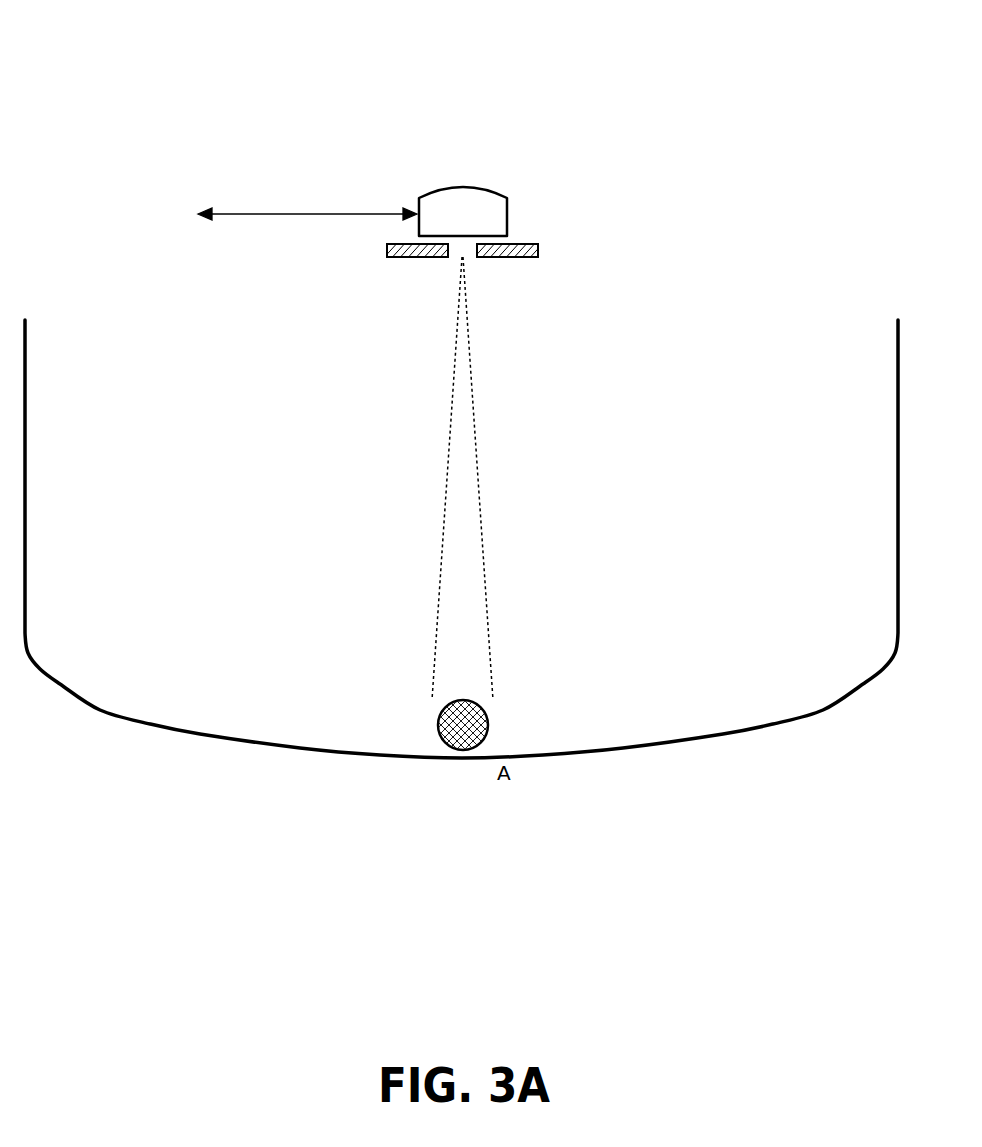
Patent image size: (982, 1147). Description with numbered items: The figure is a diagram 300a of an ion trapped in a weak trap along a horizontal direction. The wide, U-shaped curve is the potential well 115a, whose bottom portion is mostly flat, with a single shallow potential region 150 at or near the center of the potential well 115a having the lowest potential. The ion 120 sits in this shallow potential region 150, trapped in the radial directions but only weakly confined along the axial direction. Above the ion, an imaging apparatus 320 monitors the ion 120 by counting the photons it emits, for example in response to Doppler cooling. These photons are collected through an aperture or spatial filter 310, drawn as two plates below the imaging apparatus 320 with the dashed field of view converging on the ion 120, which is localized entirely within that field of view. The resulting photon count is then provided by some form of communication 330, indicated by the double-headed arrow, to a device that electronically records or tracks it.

The diagram 300a is at (178, 51).
The potential well 115a is at (30, 366).
The imaging apparatus 320 is at (505, 198).
The spatial filter 310 is at (538, 252).
The communication 330 is at (327, 212).
The ion 120 is at (473, 750).
The shallow potential region 150 is at (443, 760).